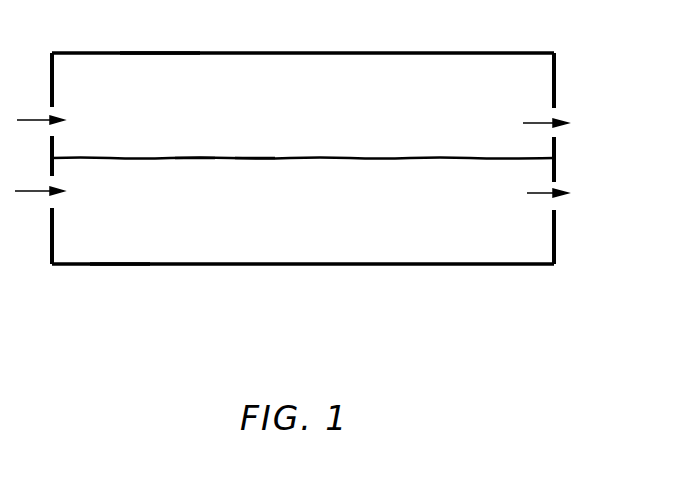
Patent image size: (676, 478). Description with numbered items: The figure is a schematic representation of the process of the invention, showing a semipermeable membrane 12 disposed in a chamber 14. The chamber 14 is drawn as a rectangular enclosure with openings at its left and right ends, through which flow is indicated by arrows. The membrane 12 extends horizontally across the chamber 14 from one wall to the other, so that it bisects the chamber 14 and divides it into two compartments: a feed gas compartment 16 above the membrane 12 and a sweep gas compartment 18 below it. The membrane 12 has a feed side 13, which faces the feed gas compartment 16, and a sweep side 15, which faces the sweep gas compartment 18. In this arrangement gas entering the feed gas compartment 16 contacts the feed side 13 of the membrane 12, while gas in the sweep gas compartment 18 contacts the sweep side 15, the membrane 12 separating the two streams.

The semipermeable membrane 12 is at (350, 158).
The feed side 13 is at (182, 157).
The chamber 14 is at (474, 52).
The sweep side 15 is at (250, 159).
The feed gas compartment 16 is at (162, 65).
The sweep gas compartment 18 is at (120, 240).